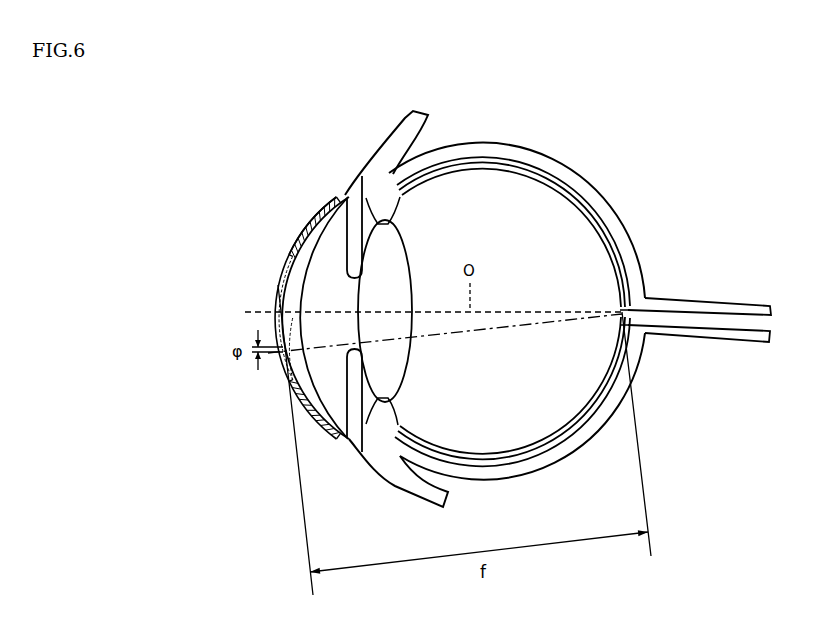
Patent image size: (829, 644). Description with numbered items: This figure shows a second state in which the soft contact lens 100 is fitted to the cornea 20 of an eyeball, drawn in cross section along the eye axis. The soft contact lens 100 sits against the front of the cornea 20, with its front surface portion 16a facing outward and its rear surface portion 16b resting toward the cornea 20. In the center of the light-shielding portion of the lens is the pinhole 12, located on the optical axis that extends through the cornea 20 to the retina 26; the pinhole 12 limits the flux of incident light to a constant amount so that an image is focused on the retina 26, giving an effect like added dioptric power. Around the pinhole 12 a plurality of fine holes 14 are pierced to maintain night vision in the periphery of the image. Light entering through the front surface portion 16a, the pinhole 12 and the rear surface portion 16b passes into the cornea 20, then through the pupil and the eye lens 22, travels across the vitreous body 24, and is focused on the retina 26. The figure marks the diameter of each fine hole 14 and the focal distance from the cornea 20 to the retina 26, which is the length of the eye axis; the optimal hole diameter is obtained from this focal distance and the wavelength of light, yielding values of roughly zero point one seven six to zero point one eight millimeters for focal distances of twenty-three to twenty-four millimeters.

The soft contact lens 100 is at (286, 251).
The pinhole 12 is at (276, 313).
The fine holes 14 is at (288, 352).
The front surface portion 16a is at (292, 399).
The rear surface portion 16b is at (285, 282).
The cornea 20 is at (317, 219).
The eye lens 22 is at (406, 266).
The vitreous body 24 is at (553, 197).
The retina 26 is at (623, 287).